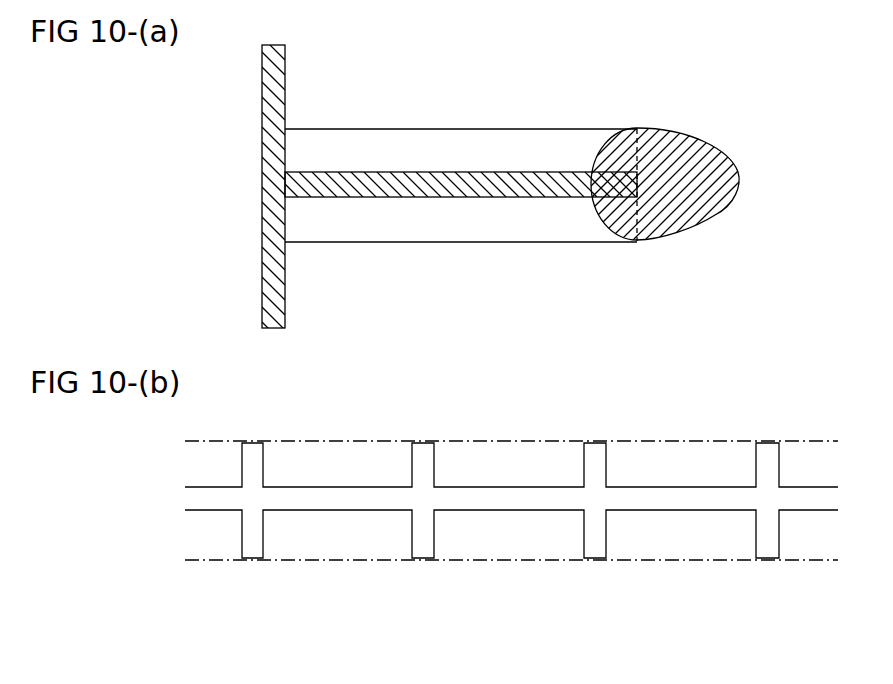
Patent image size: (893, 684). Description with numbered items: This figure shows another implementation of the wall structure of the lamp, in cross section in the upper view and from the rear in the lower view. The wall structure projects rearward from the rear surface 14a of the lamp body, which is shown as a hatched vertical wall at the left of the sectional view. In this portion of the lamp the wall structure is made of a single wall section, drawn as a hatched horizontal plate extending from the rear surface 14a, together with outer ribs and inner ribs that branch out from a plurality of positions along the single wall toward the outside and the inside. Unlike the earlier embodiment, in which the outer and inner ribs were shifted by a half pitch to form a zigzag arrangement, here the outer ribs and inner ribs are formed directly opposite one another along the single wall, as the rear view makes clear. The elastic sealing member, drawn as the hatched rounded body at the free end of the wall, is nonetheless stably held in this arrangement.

The rear surface 14a is at (280, 107).